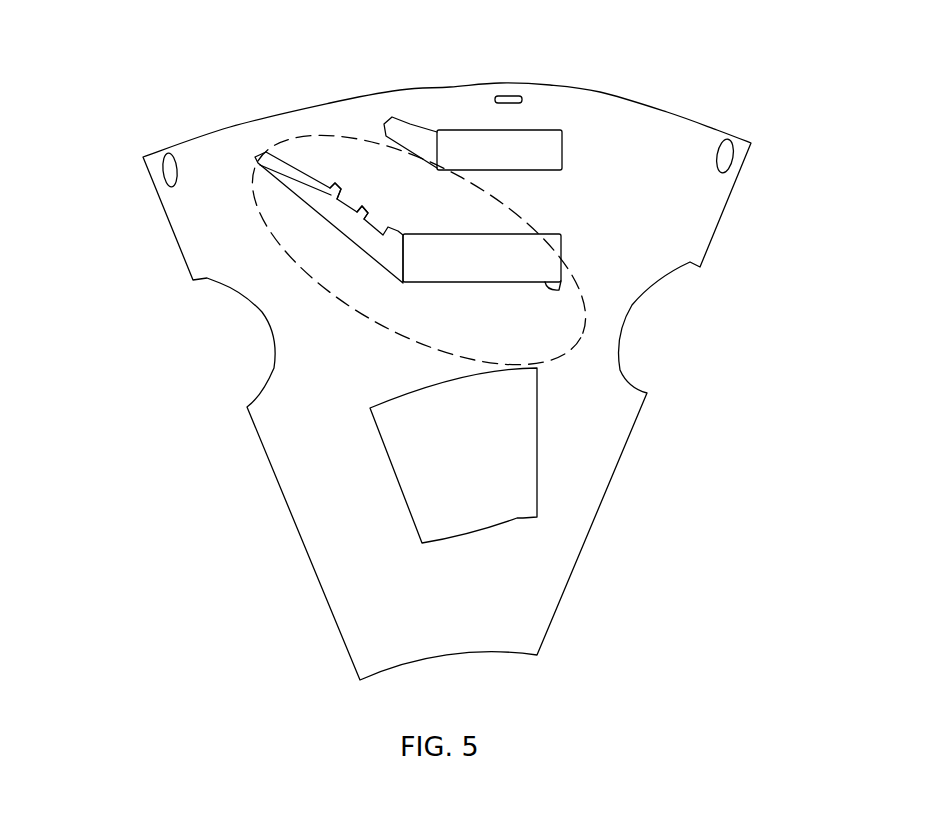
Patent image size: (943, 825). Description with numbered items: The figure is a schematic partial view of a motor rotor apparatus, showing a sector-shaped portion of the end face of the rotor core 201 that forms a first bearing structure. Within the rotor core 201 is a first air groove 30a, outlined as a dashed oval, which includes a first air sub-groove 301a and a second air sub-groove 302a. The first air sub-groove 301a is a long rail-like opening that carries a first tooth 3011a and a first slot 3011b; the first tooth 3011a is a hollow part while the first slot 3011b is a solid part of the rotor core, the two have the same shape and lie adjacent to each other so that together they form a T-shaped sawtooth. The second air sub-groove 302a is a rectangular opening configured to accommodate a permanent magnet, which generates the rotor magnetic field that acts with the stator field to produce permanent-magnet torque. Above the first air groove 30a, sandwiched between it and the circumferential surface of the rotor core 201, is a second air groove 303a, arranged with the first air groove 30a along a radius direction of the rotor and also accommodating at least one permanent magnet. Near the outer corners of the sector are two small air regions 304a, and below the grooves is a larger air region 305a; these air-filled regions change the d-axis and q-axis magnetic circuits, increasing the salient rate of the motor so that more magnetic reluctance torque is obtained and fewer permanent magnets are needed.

The rotor core 201 is at (575, 118).
The air region 304a is at (173, 168).
The first air groove 30a is at (378, 322).
The first air sub-groove 301a is at (290, 175).
The first tooth 3011a is at (334, 187).
The first slot 3011b is at (363, 209).
The second air groove 303a is at (450, 142).
The second air sub-groove 302a is at (435, 250).
The air region 305a is at (395, 417).